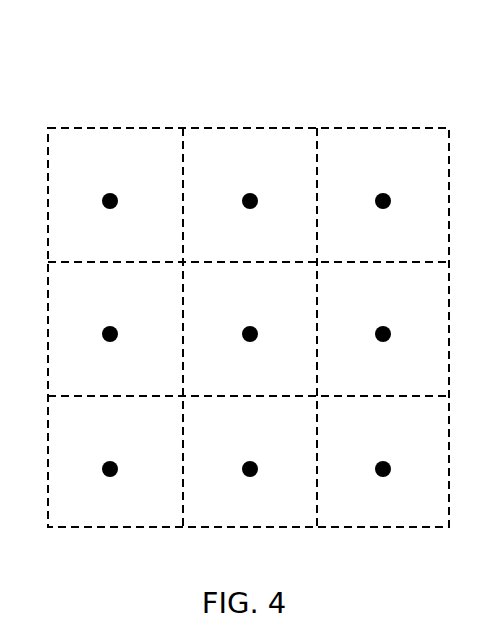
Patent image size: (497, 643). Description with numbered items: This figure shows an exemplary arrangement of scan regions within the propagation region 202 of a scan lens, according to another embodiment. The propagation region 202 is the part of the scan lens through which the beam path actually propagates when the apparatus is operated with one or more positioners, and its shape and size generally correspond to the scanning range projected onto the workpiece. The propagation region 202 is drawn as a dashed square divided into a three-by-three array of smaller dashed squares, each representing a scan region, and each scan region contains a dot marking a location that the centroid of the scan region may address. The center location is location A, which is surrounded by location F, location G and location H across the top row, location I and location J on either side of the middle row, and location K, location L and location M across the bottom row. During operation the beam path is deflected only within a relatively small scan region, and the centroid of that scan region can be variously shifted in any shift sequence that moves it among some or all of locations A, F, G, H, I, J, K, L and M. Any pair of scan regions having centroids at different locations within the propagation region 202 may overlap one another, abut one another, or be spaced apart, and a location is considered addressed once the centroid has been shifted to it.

The propagation region 202 is at (400, 128).
The location H is at (111, 199).
The location G is at (251, 199).
The location F is at (384, 199).
The location J is at (111, 332).
The location A is at (251, 332).
The location I is at (384, 332).
The location M is at (111, 467).
The location L is at (251, 467).
The location K is at (384, 467).